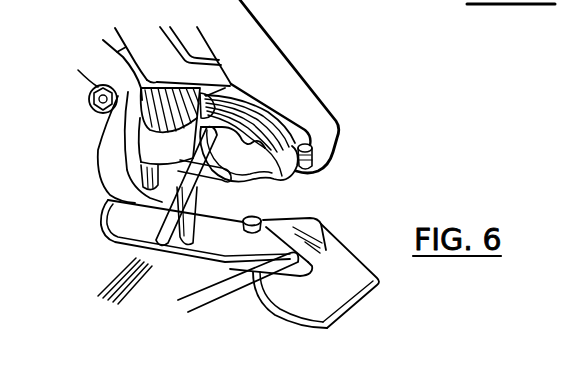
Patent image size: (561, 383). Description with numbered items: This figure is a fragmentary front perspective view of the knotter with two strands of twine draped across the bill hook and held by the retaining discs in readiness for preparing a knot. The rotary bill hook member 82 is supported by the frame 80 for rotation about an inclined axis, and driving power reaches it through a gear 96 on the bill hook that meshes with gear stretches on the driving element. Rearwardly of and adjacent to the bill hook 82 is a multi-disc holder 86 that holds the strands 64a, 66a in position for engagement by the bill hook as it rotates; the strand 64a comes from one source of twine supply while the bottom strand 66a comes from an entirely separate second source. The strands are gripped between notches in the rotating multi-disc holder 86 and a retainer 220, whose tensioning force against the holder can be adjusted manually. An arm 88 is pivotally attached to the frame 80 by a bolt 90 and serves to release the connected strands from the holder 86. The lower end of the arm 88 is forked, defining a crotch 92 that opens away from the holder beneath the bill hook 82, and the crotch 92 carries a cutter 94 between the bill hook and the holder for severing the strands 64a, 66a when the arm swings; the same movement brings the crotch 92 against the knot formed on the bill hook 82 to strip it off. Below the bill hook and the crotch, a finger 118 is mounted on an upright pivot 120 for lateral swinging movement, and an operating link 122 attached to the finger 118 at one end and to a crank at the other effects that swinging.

The frame 80 is at (255, 33).
The retainer 220 is at (206, 96).
The gear 96 is at (157, 82).
The multi-disc holder 86 is at (277, 137).
The cutter 94 is at (272, 181).
The bolt 90 is at (88, 114).
The arm 88 is at (95, 161).
The rotary bill hook member 82 is at (204, 186).
The crotch 92 is at (162, 246).
The finger 118 is at (118, 221).
The strand 64a is at (106, 273).
The bottom strand 66a is at (127, 292).
The upright pivot 120 is at (262, 222).
The operating link 122 is at (227, 284).